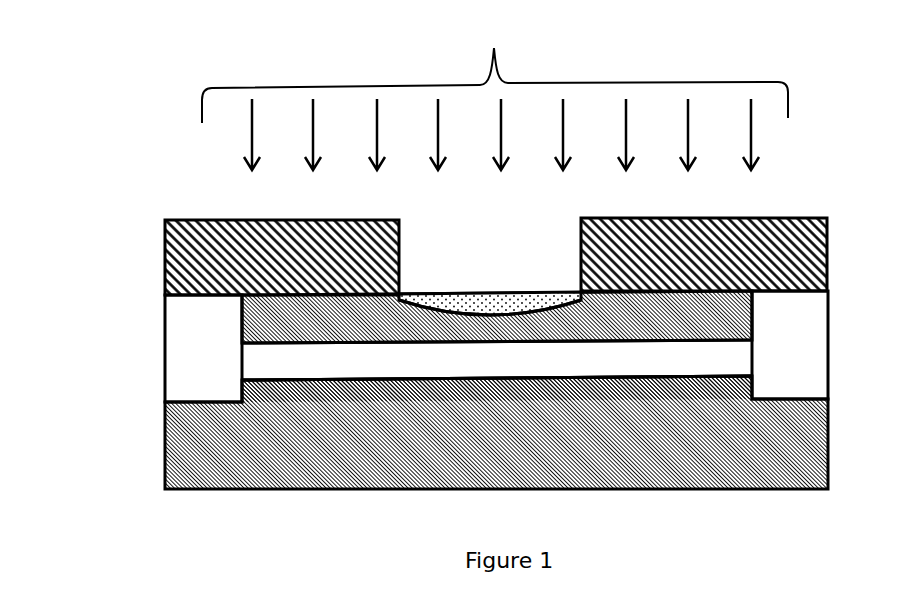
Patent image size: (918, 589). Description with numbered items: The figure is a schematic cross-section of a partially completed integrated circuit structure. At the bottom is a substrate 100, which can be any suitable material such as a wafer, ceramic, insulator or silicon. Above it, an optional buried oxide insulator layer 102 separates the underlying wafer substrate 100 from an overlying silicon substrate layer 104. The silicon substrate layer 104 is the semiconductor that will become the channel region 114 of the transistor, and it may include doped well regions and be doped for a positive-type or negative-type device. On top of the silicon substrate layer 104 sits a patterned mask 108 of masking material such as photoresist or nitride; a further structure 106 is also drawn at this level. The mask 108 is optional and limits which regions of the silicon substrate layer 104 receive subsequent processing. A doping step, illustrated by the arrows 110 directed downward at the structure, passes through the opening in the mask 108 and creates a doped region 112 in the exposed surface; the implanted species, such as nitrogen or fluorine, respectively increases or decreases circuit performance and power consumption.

The substrate 100 is at (155, 435).
The buried oxide insulator layer 102 is at (232, 362).
The silicon substrate layer 104 is at (232, 318).
The second layer 106 is at (155, 318).
The mask 108 is at (155, 260).
The arrows 110 is at (495, 86).
The doped region 112 is at (490, 330).
The channel region 114 is at (537, 342).